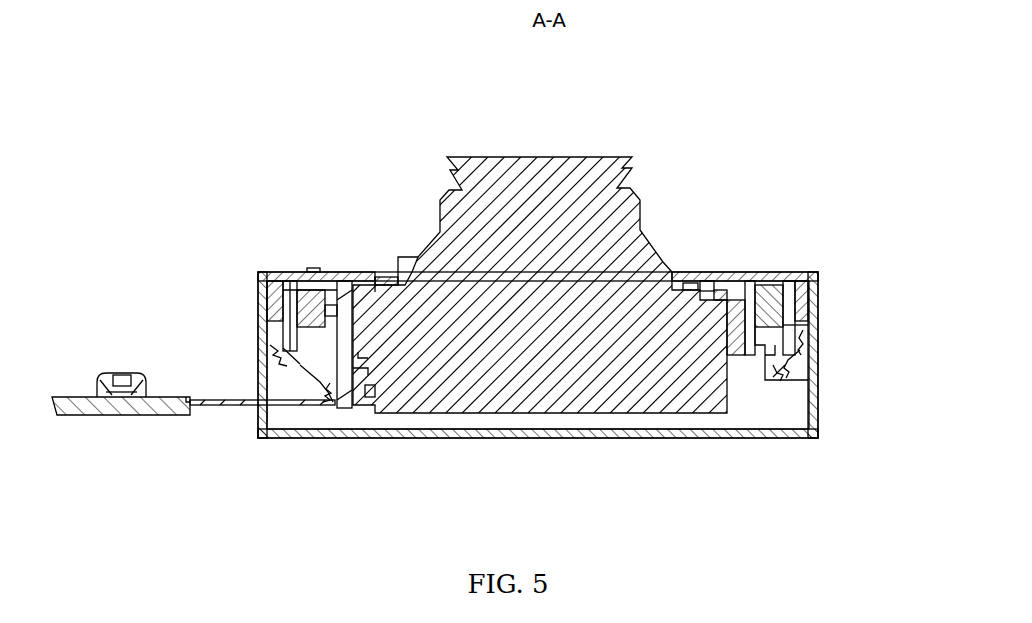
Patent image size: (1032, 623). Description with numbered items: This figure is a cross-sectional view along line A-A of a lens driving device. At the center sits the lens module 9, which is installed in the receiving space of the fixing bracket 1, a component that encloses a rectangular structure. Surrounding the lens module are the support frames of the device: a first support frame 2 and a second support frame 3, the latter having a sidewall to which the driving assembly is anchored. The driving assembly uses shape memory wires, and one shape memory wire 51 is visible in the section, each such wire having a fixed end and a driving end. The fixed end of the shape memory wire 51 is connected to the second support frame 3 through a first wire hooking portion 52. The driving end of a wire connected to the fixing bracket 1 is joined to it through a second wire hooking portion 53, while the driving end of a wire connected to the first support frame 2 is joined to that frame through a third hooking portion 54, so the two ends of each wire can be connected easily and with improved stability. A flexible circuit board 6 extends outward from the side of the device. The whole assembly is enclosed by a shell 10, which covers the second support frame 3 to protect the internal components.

The lens module 9 is at (580, 190).
The fixing bracket 1 is at (743, 275).
The first support frame 2 is at (777, 277).
The second support frame 3 is at (817, 283).
The first wire hooking portion 52 is at (798, 343).
The shape memory wire 51 is at (788, 365).
The third hooking portion 54 is at (775, 375).
The second wire hooking portion 53 is at (328, 390).
The flexible circuit board 6 is at (225, 403).
The shell 10 is at (283, 362).